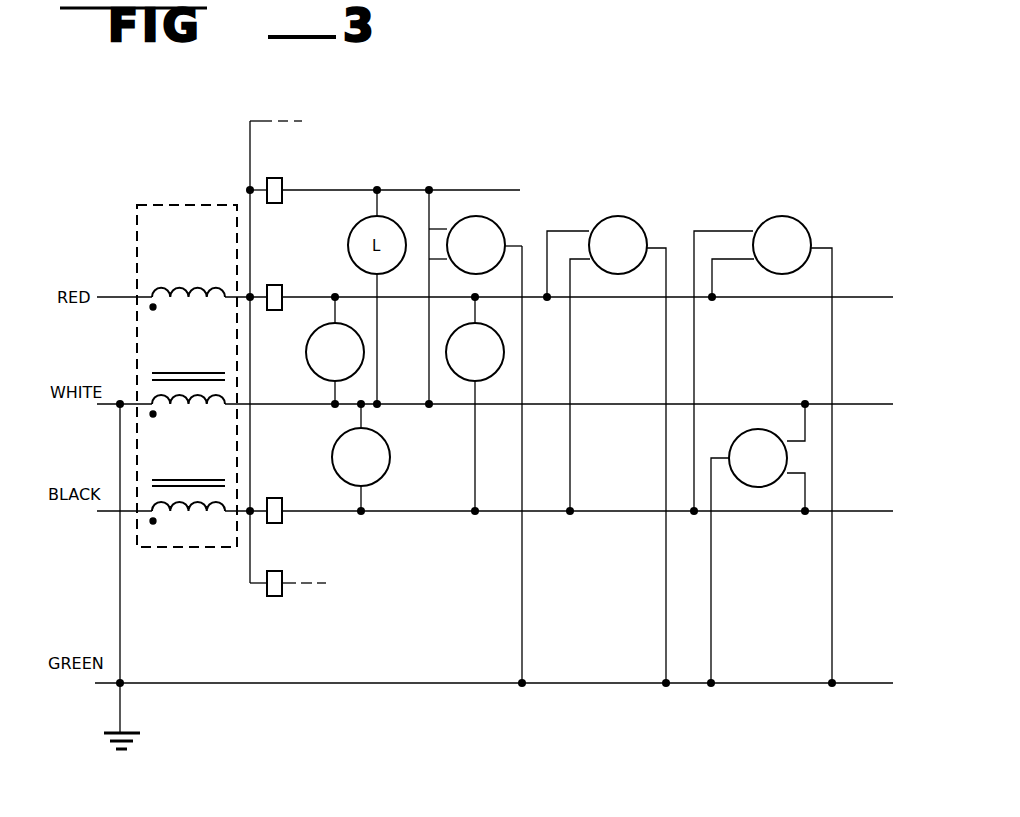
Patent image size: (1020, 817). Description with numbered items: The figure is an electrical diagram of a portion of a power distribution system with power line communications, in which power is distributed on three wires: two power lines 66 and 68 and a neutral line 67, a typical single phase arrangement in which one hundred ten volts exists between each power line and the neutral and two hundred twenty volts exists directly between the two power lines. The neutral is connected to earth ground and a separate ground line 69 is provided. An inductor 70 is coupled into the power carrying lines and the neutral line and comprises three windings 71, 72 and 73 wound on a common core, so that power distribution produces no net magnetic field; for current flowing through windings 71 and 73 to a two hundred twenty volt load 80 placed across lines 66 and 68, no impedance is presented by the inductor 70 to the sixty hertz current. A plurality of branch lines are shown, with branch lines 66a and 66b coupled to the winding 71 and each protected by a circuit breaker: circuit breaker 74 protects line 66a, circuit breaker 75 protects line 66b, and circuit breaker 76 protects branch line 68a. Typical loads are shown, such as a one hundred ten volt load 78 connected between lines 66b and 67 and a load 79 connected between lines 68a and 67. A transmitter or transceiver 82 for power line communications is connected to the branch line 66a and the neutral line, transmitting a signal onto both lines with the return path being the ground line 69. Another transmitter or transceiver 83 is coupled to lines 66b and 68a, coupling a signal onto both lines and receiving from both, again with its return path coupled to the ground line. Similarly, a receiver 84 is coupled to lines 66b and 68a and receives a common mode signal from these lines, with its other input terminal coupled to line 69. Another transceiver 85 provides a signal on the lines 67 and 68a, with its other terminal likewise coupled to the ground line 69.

The power line 66 is at (114, 296).
The branch line 66a is at (338, 190).
The branch line 66b is at (864, 298).
The neutral line 67 is at (108, 406).
The power line 68 is at (112, 510).
The branch line 68a is at (865, 511).
The ground line 69 is at (108, 684).
The inductor 70 is at (187, 400).
The winding 71 is at (182, 277).
The winding 72 is at (188, 391).
The winding 73 is at (194, 496).
The circuit breaker 74 is at (276, 203).
The circuit breaker 75 is at (274, 285).
The circuit breaker 76 is at (274, 497).
The load 78 is at (310, 339).
The load 79 is at (388, 453).
The load 80 is at (495, 342).
The transmitter or transceiver 82 is at (489, 224).
The transmitter or transceiver 83 is at (639, 227).
The receiver 84 is at (804, 224).
The transceiver 85 is at (734, 445).